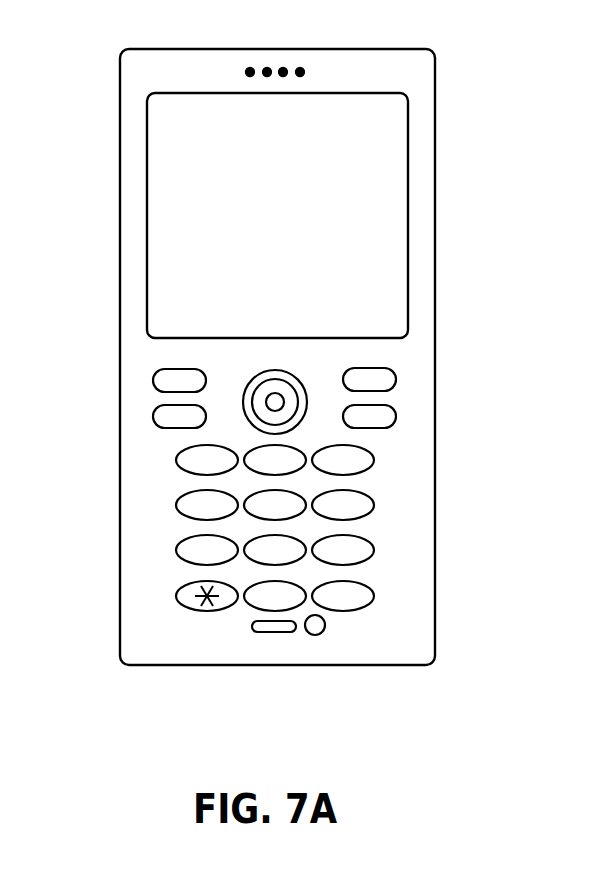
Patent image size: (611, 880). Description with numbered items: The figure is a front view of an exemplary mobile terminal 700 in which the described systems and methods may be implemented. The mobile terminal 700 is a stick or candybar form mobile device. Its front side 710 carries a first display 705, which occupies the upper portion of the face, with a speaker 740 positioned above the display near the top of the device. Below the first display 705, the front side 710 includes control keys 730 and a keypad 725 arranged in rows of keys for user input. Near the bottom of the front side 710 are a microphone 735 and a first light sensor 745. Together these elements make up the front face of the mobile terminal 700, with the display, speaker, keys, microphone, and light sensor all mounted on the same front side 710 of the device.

The mobile terminal 700 is at (311, 367).
The first display 705 is at (362, 151).
The front side 710 is at (413, 353).
The keypad 725 is at (394, 528).
The control keys 730 is at (132, 402).
The microphone 735 is at (265, 632).
The speaker 740 is at (283, 66).
The first light sensor 745 is at (322, 633).